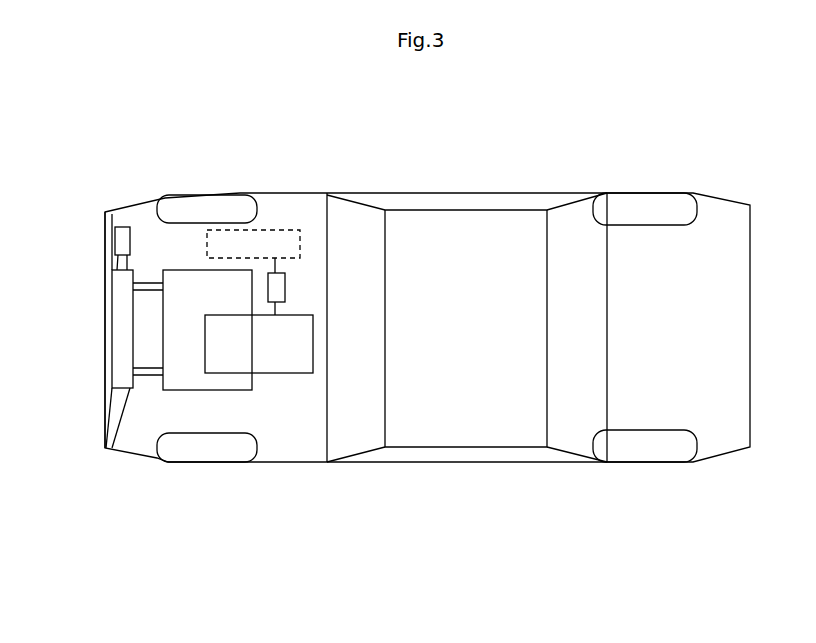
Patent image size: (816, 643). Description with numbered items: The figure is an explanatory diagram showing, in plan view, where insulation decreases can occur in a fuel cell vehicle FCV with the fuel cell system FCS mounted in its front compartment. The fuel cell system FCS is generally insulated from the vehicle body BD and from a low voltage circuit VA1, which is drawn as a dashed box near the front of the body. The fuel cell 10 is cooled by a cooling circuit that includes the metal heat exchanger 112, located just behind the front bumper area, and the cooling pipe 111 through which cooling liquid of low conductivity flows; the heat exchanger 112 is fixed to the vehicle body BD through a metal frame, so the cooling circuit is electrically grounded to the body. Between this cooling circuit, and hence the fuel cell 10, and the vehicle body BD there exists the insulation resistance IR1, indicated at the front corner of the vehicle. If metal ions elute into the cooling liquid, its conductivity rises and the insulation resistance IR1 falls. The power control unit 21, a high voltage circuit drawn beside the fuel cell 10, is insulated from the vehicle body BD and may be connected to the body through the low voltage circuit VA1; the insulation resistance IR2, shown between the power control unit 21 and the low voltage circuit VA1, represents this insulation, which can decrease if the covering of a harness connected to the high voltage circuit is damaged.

The vehicle body BD is at (262, 226).
The cooling pipe 111 is at (100, 377).
The heat exchanger 112 is at (112, 375).
The insulation resistance IR1 is at (106, 236).
The fuel cell 10 is at (216, 391).
The power control unit 21 is at (270, 373).
The insulation resistance IR2 is at (285, 287).
The low voltage circuit VA1 is at (253, 244).
The fuel cell system FCS is at (146, 237).
The fuel cell vehicle FCV is at (437, 507).